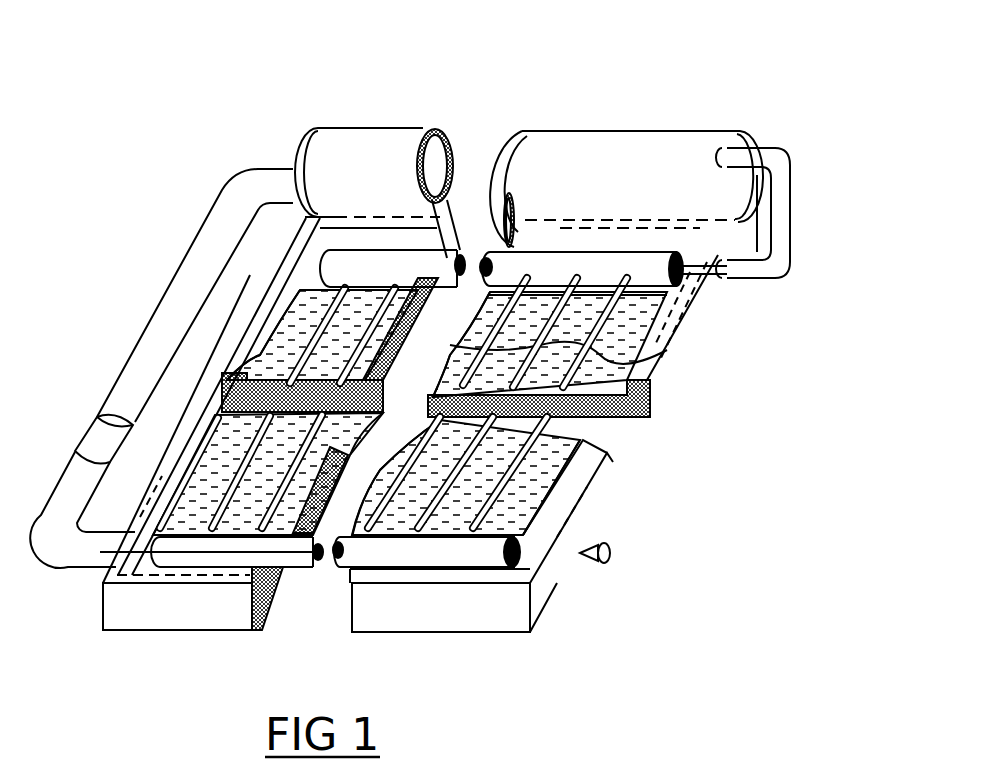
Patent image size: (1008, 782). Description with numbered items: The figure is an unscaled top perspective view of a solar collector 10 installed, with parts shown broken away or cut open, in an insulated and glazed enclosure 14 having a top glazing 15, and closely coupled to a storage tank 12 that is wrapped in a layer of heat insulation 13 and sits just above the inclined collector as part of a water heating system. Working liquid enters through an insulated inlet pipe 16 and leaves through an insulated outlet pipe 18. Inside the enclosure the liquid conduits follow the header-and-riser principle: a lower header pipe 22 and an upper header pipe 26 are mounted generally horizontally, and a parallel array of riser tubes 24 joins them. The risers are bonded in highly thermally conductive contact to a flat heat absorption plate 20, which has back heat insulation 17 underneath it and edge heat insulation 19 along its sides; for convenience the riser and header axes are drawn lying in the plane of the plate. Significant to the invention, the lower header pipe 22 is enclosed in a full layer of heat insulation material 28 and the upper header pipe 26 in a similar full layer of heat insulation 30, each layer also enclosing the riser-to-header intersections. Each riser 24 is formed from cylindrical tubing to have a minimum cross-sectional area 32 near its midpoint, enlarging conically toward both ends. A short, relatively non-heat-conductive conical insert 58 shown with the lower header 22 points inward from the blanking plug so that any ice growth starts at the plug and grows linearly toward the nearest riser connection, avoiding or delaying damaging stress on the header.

The collector 10 is at (763, 450).
The tank 12 is at (370, 128).
The layer of heat insulation 13 is at (450, 128).
The enclosure 14 is at (562, 570).
The top glazing 15 is at (440, 290).
The insulated inlet pipe 16 is at (100, 428).
The back heat insulation 17 is at (628, 420).
The insulated outlet pipe 18 is at (790, 200).
The edge heat insulation 19 is at (230, 392).
The heat absorption plate 20 is at (653, 325).
The lower header pipe 22 is at (322, 565).
The riser tube 24 is at (560, 447).
The upper header pipe 26 is at (482, 255).
The heat insulation material 28 is at (337, 563).
The heat insulation 30 is at (678, 273).
The minimum cross-sectional area 32 is at (230, 412).
The conical insert 58 is at (610, 553).